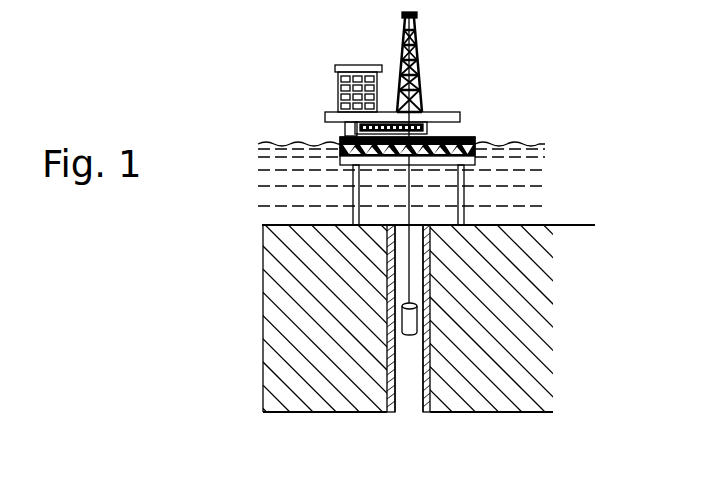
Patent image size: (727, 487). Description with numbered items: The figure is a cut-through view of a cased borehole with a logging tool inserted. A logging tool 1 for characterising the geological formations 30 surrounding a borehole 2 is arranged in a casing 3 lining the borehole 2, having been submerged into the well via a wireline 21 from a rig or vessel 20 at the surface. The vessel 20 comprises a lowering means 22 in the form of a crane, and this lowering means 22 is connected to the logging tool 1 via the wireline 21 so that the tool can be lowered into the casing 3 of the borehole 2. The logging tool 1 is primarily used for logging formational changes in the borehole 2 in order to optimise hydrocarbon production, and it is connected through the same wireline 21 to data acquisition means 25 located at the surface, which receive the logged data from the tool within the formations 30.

The logging tool 1 is at (417, 317).
The borehole 2 is at (408, 369).
The casing 3 is at (430, 265).
The rig or vessel 20 is at (460, 117).
The wireline 21 is at (407, 198).
The lowering means 22 is at (418, 68).
The data acquisition means 25 is at (352, 92).
The geological formations 30 is at (347, 279).